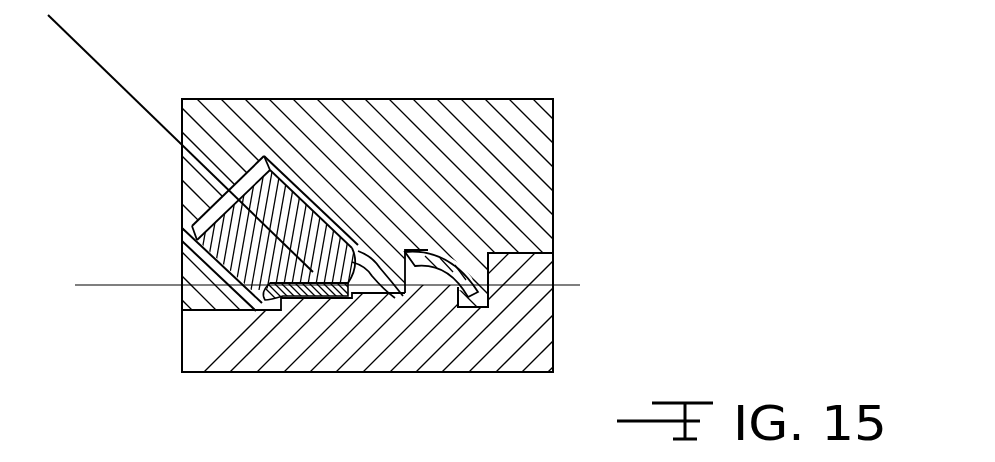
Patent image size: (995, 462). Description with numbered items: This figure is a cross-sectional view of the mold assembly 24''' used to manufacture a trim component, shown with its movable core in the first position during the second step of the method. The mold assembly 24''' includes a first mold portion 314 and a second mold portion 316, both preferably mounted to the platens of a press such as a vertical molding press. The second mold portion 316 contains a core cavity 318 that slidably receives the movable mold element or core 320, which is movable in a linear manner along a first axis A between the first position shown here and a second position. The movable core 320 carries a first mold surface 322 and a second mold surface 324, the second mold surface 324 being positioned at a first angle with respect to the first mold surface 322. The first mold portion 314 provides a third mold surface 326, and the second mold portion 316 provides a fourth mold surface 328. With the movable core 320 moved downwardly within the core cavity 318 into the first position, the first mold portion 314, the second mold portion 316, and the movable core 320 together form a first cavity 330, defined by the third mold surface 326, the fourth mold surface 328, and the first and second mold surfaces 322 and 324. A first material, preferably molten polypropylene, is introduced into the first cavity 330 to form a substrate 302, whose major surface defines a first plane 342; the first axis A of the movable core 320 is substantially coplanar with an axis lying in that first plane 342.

The substrate 302 is at (371, 280).
The first mold portion 314 is at (523, 348).
The second mold portion 316 is at (528, 206).
The core cavity 318 is at (311, 200).
The movable core 320 is at (222, 237).
The first mold surface 322 is at (282, 305).
The second mold surface 324 is at (478, 292).
The third mold surface 326 is at (357, 298).
The fourth mold surface 328 is at (445, 300).
The first cavity 330 is at (385, 245).
The first plane 342 is at (108, 285).
The mold assembly 24''' is at (661, 116).
The first axis A is at (66, 32).